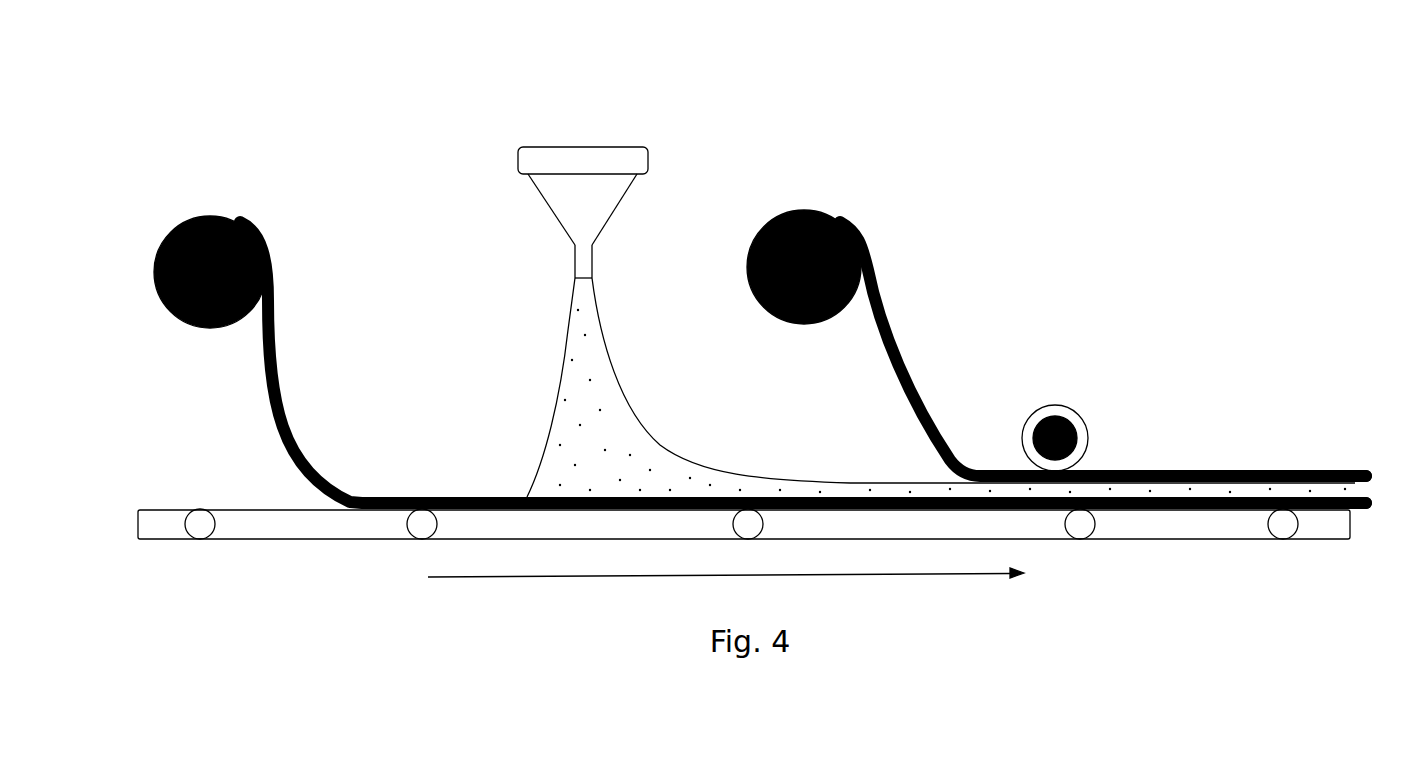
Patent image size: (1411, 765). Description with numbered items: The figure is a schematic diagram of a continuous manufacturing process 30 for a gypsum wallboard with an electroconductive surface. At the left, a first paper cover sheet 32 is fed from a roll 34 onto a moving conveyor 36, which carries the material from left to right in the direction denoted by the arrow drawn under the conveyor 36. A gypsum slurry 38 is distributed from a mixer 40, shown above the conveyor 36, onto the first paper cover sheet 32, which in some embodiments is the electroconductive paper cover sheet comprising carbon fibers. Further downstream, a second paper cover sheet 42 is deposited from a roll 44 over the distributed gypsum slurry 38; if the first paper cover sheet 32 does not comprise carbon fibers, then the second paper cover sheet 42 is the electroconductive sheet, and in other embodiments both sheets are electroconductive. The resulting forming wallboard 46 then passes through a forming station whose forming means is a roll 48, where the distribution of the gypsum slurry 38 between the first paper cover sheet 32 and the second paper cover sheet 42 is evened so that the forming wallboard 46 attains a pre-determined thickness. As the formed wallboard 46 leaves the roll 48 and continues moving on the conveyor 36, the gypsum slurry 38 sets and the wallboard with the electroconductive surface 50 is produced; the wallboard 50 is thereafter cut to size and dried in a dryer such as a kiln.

The manufacturing process of a gypsum wallboard with the electroconductive surface 30 is at (1134, 214).
The first paper cover sheet 32 is at (385, 496).
The roll 34 is at (220, 217).
The moving conveyor 36 is at (198, 515).
The gypsum slurry 38 is at (620, 452).
The mixer 40 is at (612, 160).
The second paper cover sheet 42 is at (893, 317).
The roll 44 is at (818, 210).
The forming wallboard 46 is at (983, 468).
The roll 48 is at (1070, 417).
The wallboard with the electroconductive surface 50 is at (1315, 468).